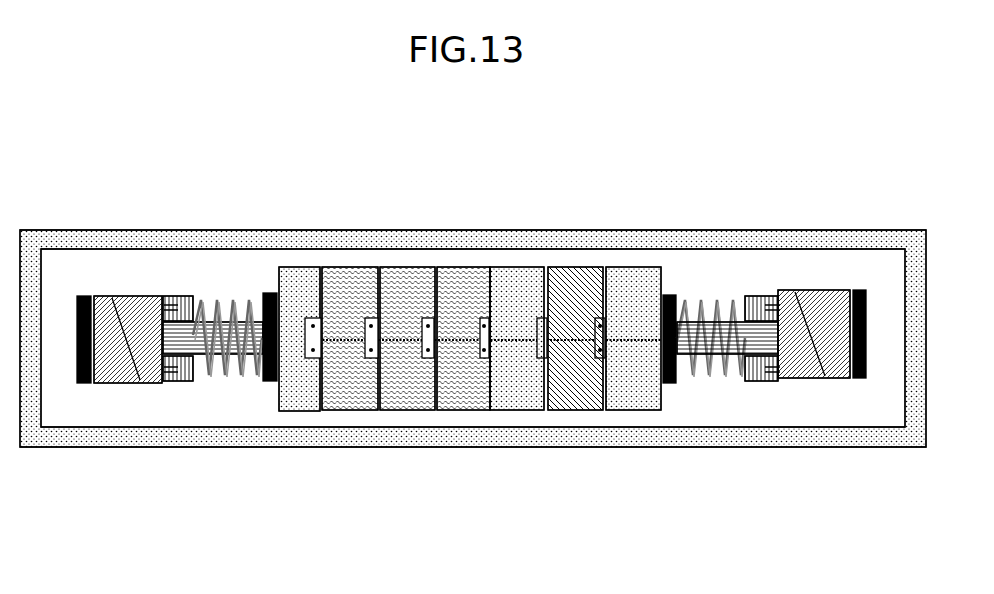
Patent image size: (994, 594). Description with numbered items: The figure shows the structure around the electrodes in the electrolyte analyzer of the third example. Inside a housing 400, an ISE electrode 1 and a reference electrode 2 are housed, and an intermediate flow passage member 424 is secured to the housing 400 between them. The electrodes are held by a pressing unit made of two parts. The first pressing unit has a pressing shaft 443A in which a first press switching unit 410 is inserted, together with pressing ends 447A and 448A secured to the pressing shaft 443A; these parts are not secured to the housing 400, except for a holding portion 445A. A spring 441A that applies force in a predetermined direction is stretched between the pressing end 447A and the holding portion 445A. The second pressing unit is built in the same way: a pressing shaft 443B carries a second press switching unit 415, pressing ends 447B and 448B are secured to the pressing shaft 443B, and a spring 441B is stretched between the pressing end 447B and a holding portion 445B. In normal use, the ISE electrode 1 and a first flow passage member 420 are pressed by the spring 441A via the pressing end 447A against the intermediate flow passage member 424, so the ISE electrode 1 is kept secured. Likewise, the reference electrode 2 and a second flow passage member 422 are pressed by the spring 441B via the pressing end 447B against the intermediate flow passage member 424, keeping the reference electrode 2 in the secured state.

The housing 400 is at (130, 242).
The pressing end 448A is at (86, 294).
The pressing end 448B is at (860, 290).
The first press switching unit 410 is at (113, 384).
The second press switching unit 415 is at (813, 380).
The holding portion 445A is at (177, 295).
The holding portion 445B is at (768, 293).
The pressing shaft 443A is at (186, 349).
The pressing shaft 443B is at (750, 294).
The spring 441A is at (248, 374).
The spring 441B is at (740, 372).
The pressing end 447A is at (270, 292).
The pressing end 447B is at (670, 384).
The first flow passage member 420 is at (305, 270).
The intermediate flow passage member 424 is at (505, 411).
The second flow passage member 422 is at (625, 411).
The reference electrode 2 is at (578, 267).
The ISE electrode 1 is at (488, 412).